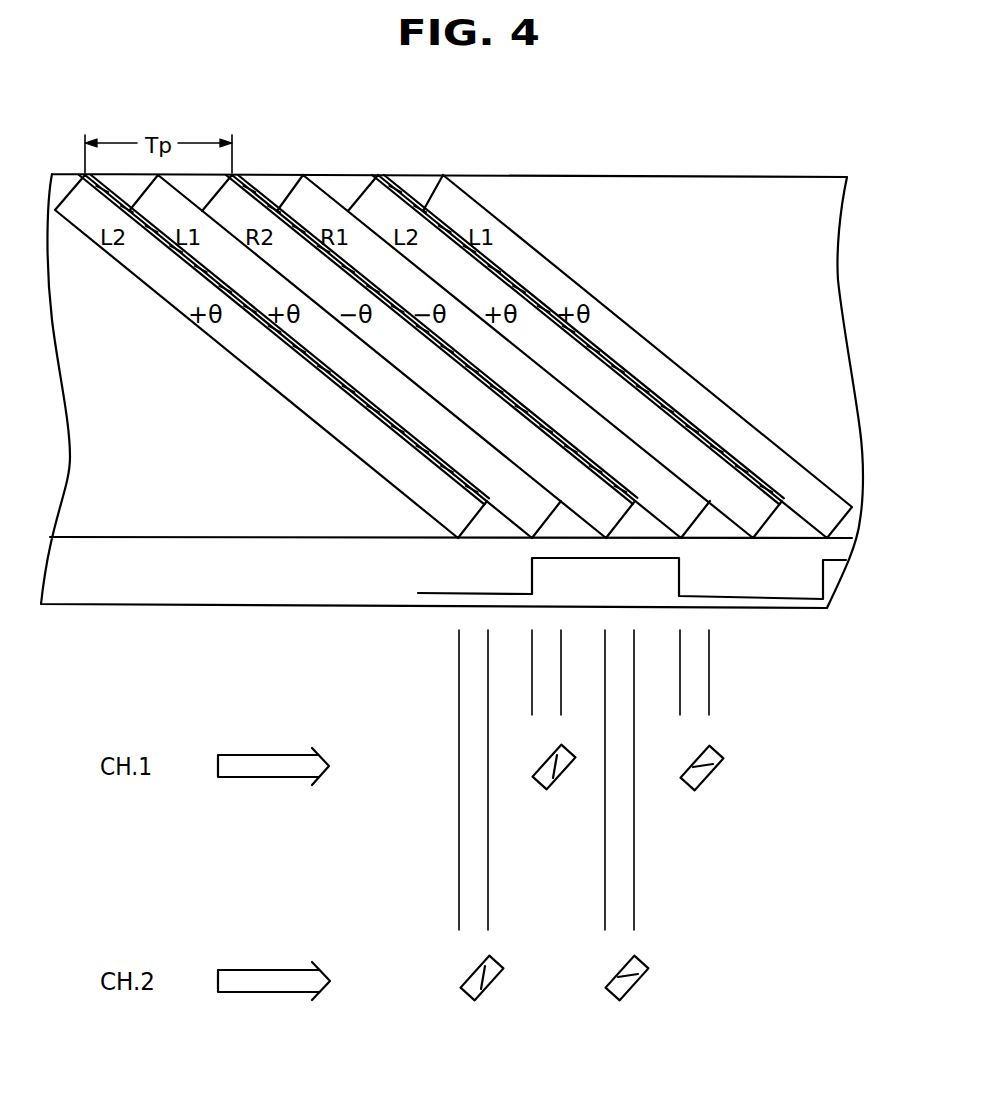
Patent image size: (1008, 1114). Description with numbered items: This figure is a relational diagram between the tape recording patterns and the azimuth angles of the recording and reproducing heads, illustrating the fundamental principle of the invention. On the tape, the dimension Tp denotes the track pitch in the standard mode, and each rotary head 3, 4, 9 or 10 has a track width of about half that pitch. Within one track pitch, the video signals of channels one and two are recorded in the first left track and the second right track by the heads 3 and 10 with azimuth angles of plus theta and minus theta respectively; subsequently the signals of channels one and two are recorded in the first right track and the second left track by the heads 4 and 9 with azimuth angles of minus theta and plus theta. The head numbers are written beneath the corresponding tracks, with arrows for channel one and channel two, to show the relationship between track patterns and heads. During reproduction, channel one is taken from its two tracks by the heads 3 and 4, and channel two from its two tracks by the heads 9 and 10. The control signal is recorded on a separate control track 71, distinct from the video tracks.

The control track 71 is at (832, 582).
The rotary head 3 is at (549, 788).
The rotary head 4 is at (715, 788).
The rotary head 9 is at (477, 1000).
The rotary head 10 is at (641, 1000).